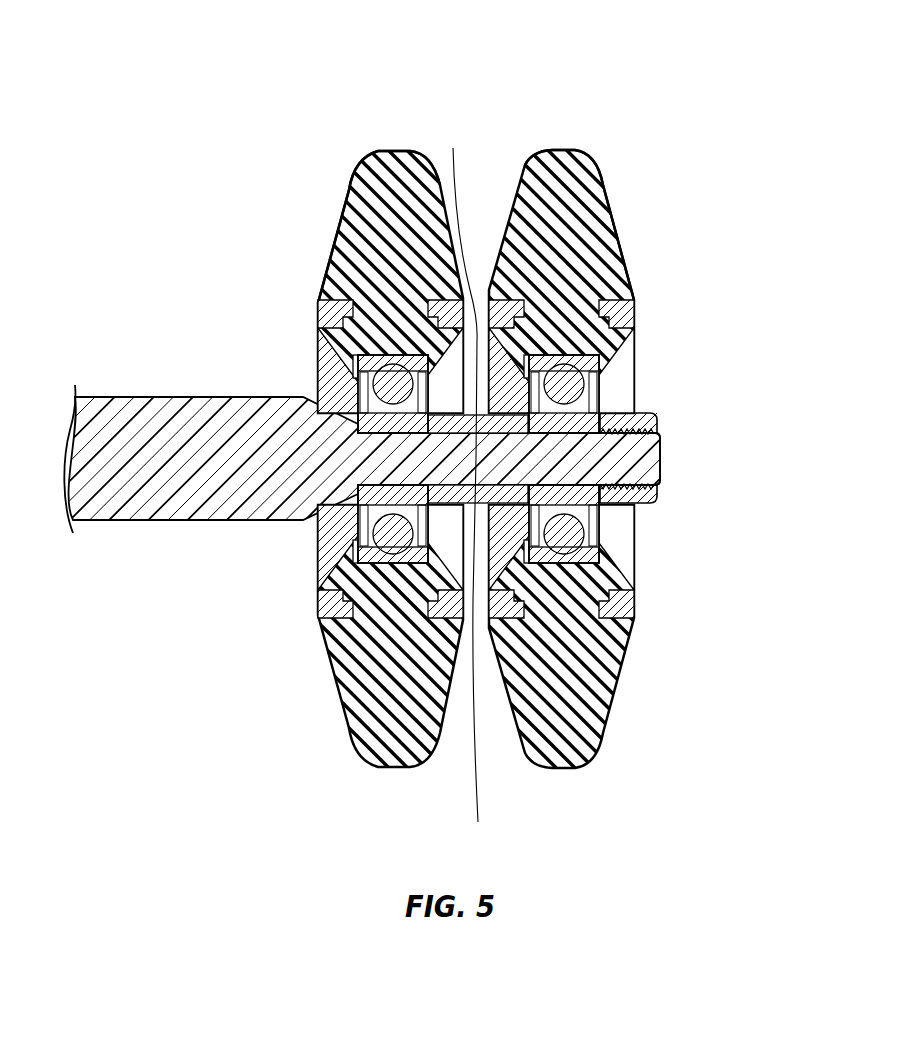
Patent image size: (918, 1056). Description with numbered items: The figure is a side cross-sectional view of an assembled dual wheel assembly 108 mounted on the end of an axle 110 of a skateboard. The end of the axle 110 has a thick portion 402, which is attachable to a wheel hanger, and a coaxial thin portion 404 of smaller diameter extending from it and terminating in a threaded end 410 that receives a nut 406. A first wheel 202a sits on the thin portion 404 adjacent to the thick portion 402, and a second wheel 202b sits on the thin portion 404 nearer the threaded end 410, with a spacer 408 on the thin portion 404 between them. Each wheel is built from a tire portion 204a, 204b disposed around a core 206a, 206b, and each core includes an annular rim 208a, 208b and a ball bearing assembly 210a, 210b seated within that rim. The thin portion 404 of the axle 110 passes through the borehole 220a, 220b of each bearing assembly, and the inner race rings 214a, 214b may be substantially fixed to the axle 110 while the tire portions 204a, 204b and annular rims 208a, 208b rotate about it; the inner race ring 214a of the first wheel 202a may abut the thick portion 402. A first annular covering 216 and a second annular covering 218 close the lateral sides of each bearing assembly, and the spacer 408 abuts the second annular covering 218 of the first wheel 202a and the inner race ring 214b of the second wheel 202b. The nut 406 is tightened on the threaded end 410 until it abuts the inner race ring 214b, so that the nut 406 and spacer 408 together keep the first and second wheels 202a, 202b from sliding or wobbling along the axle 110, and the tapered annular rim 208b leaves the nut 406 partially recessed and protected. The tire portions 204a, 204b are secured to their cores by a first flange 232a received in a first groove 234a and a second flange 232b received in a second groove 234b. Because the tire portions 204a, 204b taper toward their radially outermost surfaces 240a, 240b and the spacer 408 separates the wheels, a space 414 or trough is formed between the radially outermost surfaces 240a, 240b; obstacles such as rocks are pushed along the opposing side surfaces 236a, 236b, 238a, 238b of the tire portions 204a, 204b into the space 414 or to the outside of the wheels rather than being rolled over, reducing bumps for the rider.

The dual wheel assembly 108 is at (459, 427).
The axle 110 is at (96, 374).
The first wheel 202a is at (459, 396).
The second wheel 202b is at (459, 396).
The first tire portion 204a is at (352, 213).
The second tire portion 204b is at (598, 200).
The first core 206a is at (312, 360).
The second core 206b is at (637, 395).
The first annular rim 208a is at (322, 308).
The second annular rim 208b is at (627, 306).
The first bearing assembly 210a is at (355, 528).
The second bearing assembly 210b is at (606, 389).
The inner race ring of first bearing assembly 214a is at (340, 570).
The inner race ring of second bearing assembly 214b is at (607, 547).
The first annular covering 216 is at (358, 410).
The second annular covering 218 is at (602, 548).
The borehole of first bearing assembly 220a is at (350, 512).
The borehole of second bearing assembly 220b is at (657, 410).
The first flange 232a is at (378, 598).
The second flange 232b is at (625, 624).
The first groove 234a is at (350, 590).
The second groove 234b is at (607, 597).
The side surface of first tire portion 236a is at (335, 242).
The side surface of second tire portion 236b is at (532, 158).
The side surface of first tire portion 238a is at (441, 172).
The side surface of second tire portion 238b is at (612, 178).
The radially outermost surface of first wheel 240a is at (352, 175).
The radially outermost surface of second wheel 240b is at (562, 152).
The thick portion 402 is at (152, 417).
The thin portion 404 is at (479, 653).
The nut 406 is at (655, 418).
The spacer 408 is at (456, 290).
The threaded end 410 is at (660, 455).
The space 414 is at (487, 186).